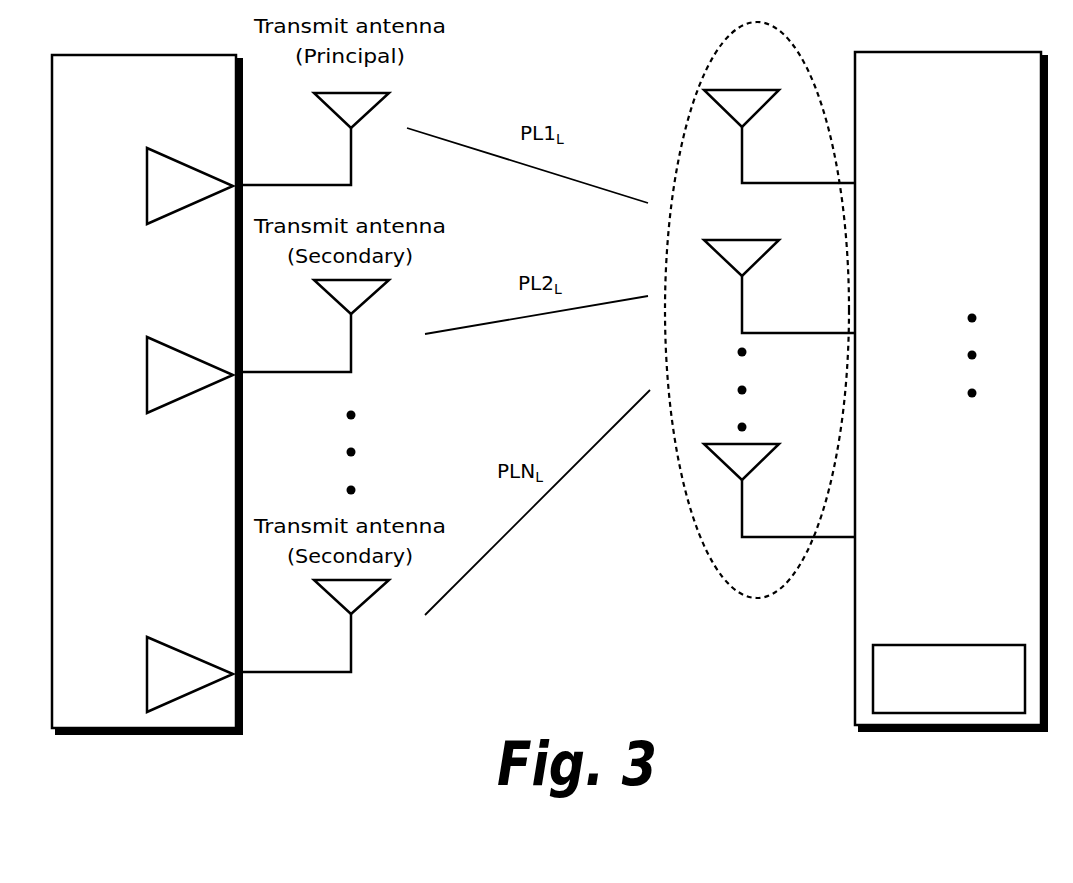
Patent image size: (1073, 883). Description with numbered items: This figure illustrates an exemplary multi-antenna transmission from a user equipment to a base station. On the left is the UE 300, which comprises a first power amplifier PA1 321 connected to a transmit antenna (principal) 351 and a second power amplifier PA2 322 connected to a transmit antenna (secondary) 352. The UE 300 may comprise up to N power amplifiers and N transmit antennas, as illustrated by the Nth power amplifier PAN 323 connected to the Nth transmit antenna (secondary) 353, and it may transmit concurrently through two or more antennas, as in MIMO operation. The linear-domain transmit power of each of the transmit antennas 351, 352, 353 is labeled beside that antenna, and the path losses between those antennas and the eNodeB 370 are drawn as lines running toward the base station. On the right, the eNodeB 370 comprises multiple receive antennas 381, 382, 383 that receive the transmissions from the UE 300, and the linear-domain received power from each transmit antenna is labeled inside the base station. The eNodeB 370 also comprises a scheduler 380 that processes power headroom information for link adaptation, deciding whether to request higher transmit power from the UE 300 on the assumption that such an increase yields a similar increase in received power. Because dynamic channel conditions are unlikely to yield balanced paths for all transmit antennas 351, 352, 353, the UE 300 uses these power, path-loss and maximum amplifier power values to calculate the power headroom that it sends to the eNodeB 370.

The user equipment (UE) 300 is at (117, 306).
The first power amplifier (PA1) 321 is at (147, 186).
The second power amplifier (PA2) 322 is at (147, 375).
The Nth power amplifier (PAN) 323 is at (147, 674).
The transmit antenna (principal) 351 is at (351, 150).
The transmit antenna (secondary) 352 is at (351, 340).
The Nth transmit antenna (secondary) 353 is at (351, 640).
The eNodeB 370 is at (928, 119).
The scheduler 380 is at (930, 704).
The receive antenna 381 is at (742, 140).
The receive antenna 382 is at (742, 288).
The receive antenna 383 is at (742, 493).